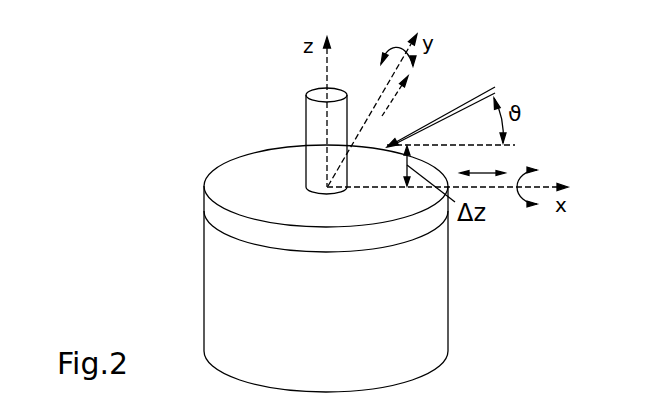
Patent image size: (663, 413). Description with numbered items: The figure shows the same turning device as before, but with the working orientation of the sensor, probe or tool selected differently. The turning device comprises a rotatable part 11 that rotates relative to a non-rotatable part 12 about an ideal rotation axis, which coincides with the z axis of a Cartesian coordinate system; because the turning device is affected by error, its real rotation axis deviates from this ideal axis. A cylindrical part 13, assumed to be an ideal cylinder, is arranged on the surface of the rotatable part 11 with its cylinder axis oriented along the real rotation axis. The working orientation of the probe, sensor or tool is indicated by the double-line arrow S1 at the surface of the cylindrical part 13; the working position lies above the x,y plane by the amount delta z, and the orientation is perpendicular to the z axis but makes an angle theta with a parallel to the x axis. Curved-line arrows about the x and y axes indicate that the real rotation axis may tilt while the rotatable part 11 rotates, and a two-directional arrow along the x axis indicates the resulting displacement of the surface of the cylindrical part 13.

The rotatable part 11 is at (204, 205).
The non-rotatable part 12 is at (204, 277).
The cylindrical part 13 is at (306, 128).
The double-line arrow S1 is at (478, 89).